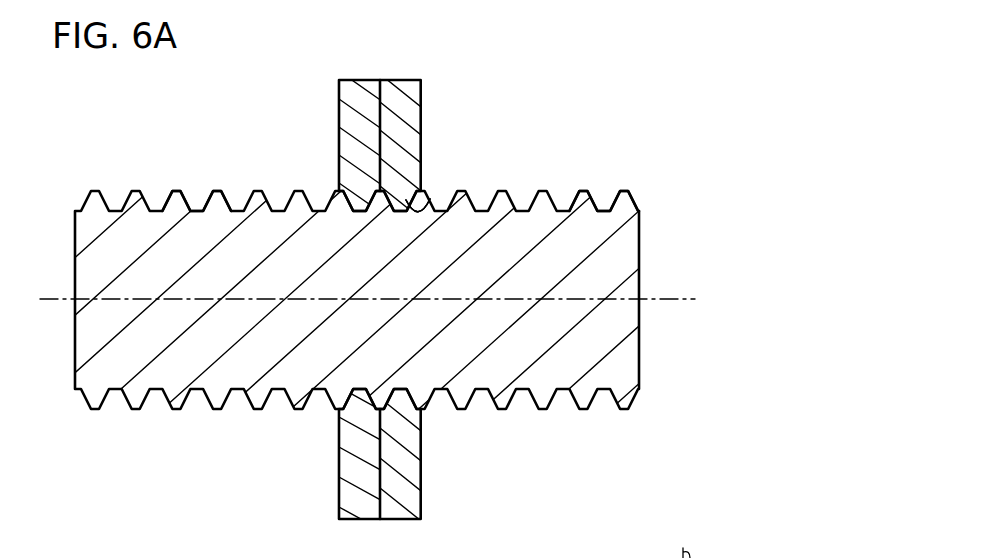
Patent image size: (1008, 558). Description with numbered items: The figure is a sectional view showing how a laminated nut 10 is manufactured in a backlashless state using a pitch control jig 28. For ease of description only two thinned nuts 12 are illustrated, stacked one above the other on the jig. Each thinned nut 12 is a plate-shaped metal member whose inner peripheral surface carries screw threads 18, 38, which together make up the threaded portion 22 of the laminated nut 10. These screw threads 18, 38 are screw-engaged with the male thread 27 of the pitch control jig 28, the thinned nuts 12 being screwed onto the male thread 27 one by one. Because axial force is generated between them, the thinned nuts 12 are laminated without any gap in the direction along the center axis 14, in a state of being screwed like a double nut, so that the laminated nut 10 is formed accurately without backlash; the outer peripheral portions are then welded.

The laminated nut 10 is at (346, 67).
The thinned nut 12 is at (407, 113).
The center axis 14 is at (672, 298).
The screw thread 18 is at (418, 205).
The threaded portion 22 is at (438, 208).
The male thread 27 is at (205, 200).
The pitch control jig 28 is at (631, 196).
The screw thread 38 is at (418, 205).